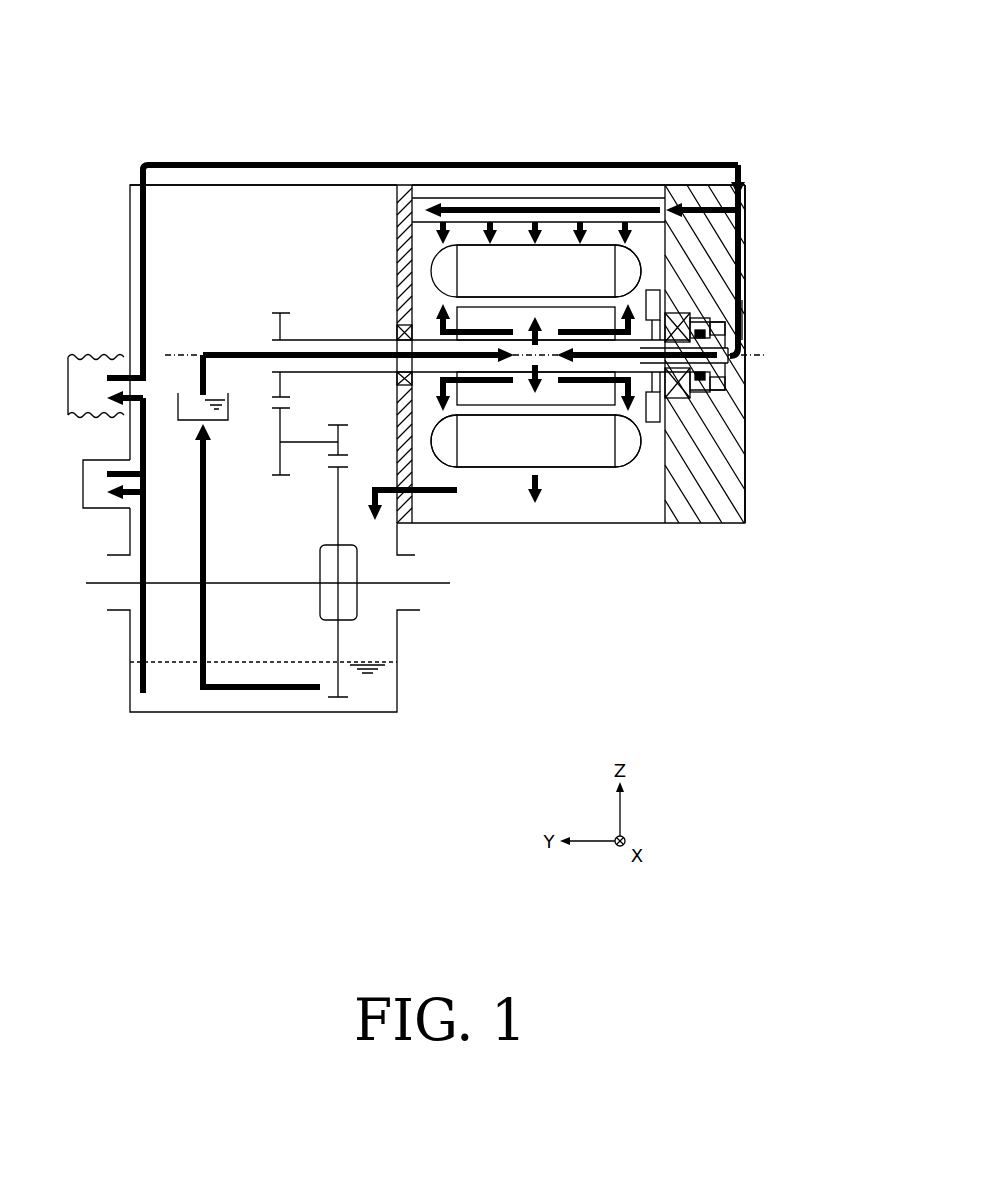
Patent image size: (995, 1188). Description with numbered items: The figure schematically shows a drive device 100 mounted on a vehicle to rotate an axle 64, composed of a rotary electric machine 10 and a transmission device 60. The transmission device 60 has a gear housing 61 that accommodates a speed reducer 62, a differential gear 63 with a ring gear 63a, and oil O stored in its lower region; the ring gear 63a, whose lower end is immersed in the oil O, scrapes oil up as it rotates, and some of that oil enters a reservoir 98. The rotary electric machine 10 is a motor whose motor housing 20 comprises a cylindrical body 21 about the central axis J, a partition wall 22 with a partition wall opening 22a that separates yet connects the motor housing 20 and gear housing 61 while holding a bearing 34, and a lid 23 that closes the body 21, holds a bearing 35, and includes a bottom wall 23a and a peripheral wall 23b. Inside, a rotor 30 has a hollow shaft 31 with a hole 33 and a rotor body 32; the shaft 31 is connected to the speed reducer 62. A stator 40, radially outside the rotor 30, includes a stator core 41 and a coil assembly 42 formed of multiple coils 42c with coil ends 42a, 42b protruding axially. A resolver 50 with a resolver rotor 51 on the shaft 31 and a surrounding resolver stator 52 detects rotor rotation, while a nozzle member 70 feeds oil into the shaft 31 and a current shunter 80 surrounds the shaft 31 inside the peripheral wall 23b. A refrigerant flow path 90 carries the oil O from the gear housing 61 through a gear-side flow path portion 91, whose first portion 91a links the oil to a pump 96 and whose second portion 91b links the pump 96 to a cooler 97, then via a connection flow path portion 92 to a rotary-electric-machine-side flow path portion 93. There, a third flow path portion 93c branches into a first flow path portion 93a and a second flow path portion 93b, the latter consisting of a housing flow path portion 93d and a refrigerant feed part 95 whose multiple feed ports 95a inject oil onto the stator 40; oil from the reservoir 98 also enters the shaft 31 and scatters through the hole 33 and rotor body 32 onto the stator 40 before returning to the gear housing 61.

The drive device 100 is at (584, 70).
The rotary electric machine 10 is at (644, 180).
The motor housing 20 is at (539, 180).
The body 21 is at (432, 198).
The partition wall 22 is at (402, 250).
The partition wall opening 22a is at (418, 502).
The lid 23 is at (748, 500).
The bottom wall 23a is at (740, 357).
The peripheral wall 23b is at (692, 402).
The rotor 30 is at (323, 322).
The shaft 31 is at (352, 338).
The rotor body 32 is at (585, 400).
The hole 33 is at (540, 362).
The bearing 34 is at (428, 324).
The bearing 35 is at (713, 400).
The stator 40 is at (613, 470).
The stator core 41 is at (578, 474).
The coil assembly 42 is at (658, 244).
The coil end 42a is at (441, 464).
The coil end 42b is at (623, 470).
The coil 42c is at (641, 272).
The resolver 50 is at (690, 418).
The resolver rotor 51 is at (642, 432).
The resolver stator 52 is at (661, 300).
The transmission device 60 is at (163, 175).
The gear housing 61 is at (236, 184).
The speed reducer 62 is at (258, 414).
The differential gear 63 is at (312, 614).
The ring gear 63a is at (342, 640).
The axle 64 is at (95, 586).
The nozzle member 70 is at (716, 365).
The current shunter 80 is at (706, 388).
The refrigerant flow path 90 is at (613, 154).
The gear-side flow path portion 91 is at (155, 697).
The first portion 91a is at (140, 680).
The second portion 91b is at (130, 435).
The connection flow path portion 92 is at (255, 163).
The rotary-electric-machine-side flow path portion 93 is at (745, 298).
The first flow path portion 93a is at (746, 320).
The second flow path portion 93b is at (742, 183).
The third flow path portion 93c is at (746, 208).
The housing flow path portion 93d is at (692, 203).
The refrigerant feed part 95 is at (580, 186).
The feed port 95a is at (505, 228).
The pump 96 is at (96, 500).
The cooler 97 is at (100, 365).
The reservoir 98 is at (177, 417).
The central axis J is at (183, 350).
The oil O is at (307, 697).